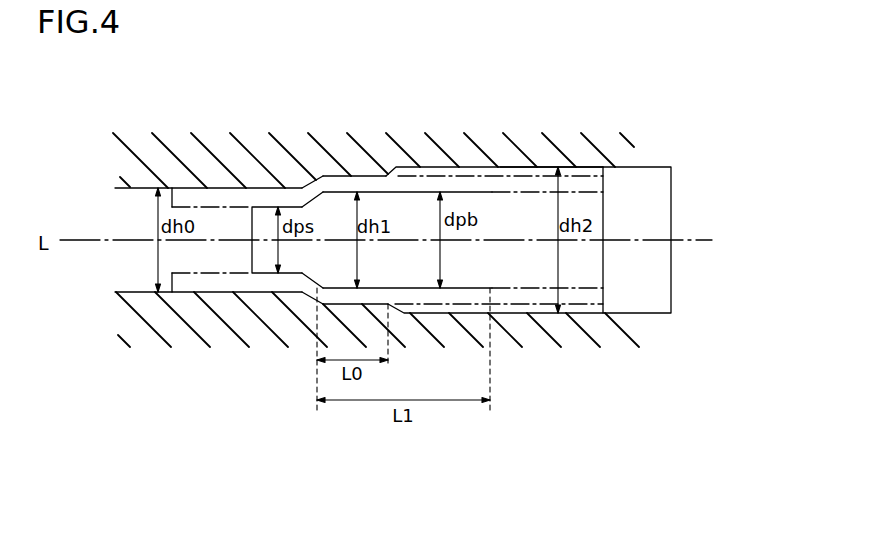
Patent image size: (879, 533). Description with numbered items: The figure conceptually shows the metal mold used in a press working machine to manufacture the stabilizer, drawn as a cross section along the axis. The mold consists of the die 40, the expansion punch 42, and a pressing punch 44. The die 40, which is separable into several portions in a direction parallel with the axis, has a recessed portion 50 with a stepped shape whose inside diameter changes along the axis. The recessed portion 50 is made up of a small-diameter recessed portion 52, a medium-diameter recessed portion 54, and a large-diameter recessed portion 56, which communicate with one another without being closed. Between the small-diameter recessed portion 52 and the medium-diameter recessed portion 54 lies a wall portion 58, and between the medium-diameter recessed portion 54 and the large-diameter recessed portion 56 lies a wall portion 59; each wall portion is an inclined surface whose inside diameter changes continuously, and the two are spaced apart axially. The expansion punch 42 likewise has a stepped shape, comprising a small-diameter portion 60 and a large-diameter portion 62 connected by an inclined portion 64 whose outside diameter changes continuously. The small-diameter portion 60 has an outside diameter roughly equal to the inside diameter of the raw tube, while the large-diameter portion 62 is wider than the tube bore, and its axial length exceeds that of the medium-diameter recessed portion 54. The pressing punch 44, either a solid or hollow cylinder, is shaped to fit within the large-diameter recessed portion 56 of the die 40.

The die 40 is at (557, 126).
The expansion punch 42 is at (417, 169).
The pressing punch 44 is at (660, 197).
The recessed portion 50 is at (142, 286).
The small-diameter recessed portion 52 is at (243, 188).
The medium-diameter recessed portion 54 is at (367, 176).
The large-diameter recessed portion 56 is at (508, 168).
The wall portion 58 is at (323, 176).
The wall portion 59 is at (435, 176).
The small-diameter portion 60 is at (263, 254).
The large-diameter portion 62 is at (457, 289).
The inclined portion 64 is at (307, 276).